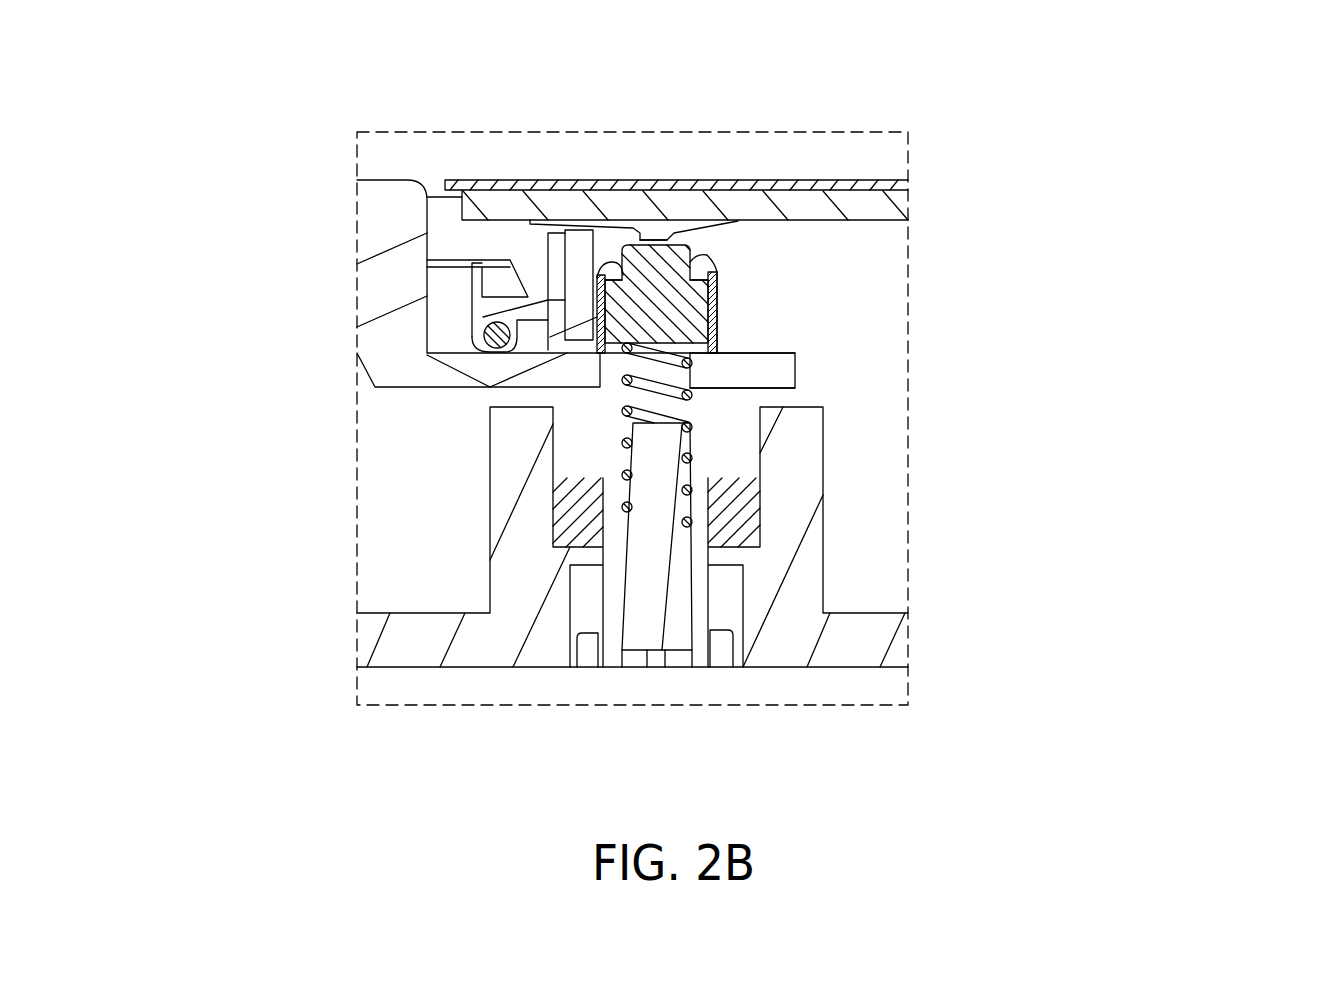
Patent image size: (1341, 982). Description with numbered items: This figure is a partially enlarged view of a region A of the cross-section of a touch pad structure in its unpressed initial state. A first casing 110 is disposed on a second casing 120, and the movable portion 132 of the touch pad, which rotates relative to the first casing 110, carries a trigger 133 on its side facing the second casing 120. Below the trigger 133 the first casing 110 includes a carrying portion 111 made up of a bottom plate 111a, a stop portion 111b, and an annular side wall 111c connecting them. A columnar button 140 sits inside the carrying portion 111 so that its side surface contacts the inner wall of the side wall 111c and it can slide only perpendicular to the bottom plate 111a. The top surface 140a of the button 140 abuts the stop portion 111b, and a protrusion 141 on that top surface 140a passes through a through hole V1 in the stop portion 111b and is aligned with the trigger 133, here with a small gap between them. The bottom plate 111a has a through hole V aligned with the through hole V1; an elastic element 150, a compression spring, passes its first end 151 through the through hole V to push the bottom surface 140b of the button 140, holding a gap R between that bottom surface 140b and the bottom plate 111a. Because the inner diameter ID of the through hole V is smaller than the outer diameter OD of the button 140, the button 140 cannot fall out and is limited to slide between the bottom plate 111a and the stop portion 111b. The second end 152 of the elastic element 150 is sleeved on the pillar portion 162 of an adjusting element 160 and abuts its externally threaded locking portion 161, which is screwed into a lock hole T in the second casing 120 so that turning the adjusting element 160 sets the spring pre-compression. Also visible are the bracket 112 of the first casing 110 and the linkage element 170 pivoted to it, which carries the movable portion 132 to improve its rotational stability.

The first casing 110 is at (383, 237).
The carrying portion 111 is at (1280, 43).
The bottom plate 111a is at (753, 390).
The stop portion 111b is at (717, 272).
The side wall 111c is at (717, 300).
The bracket 112 is at (448, 313).
The second casing 120 is at (397, 637).
The movable portion 132 is at (640, 227).
The trigger 133 is at (653, 236).
The button 140 is at (712, 260).
The top surface 140a is at (570, 228).
The bottom surface 140b is at (690, 355).
The protrusion 141 is at (683, 262).
The elastic element 150 is at (657, 383).
The first end 151 is at (623, 378).
The second end 152 is at (692, 522).
The adjusting element 160 is at (657, 658).
The locking portion 161 is at (692, 597).
The pillar portion 162 is at (670, 473).
The linkage element 170 is at (493, 338).
The region A is at (905, 132).
The through hole V1 is at (626, 266).
The through hole V is at (640, 395).
The lock hole T is at (653, 372).
The gap R is at (717, 343).
The inner diameter ID is at (622, 343).
The outer diameter OD is at (603, 343).